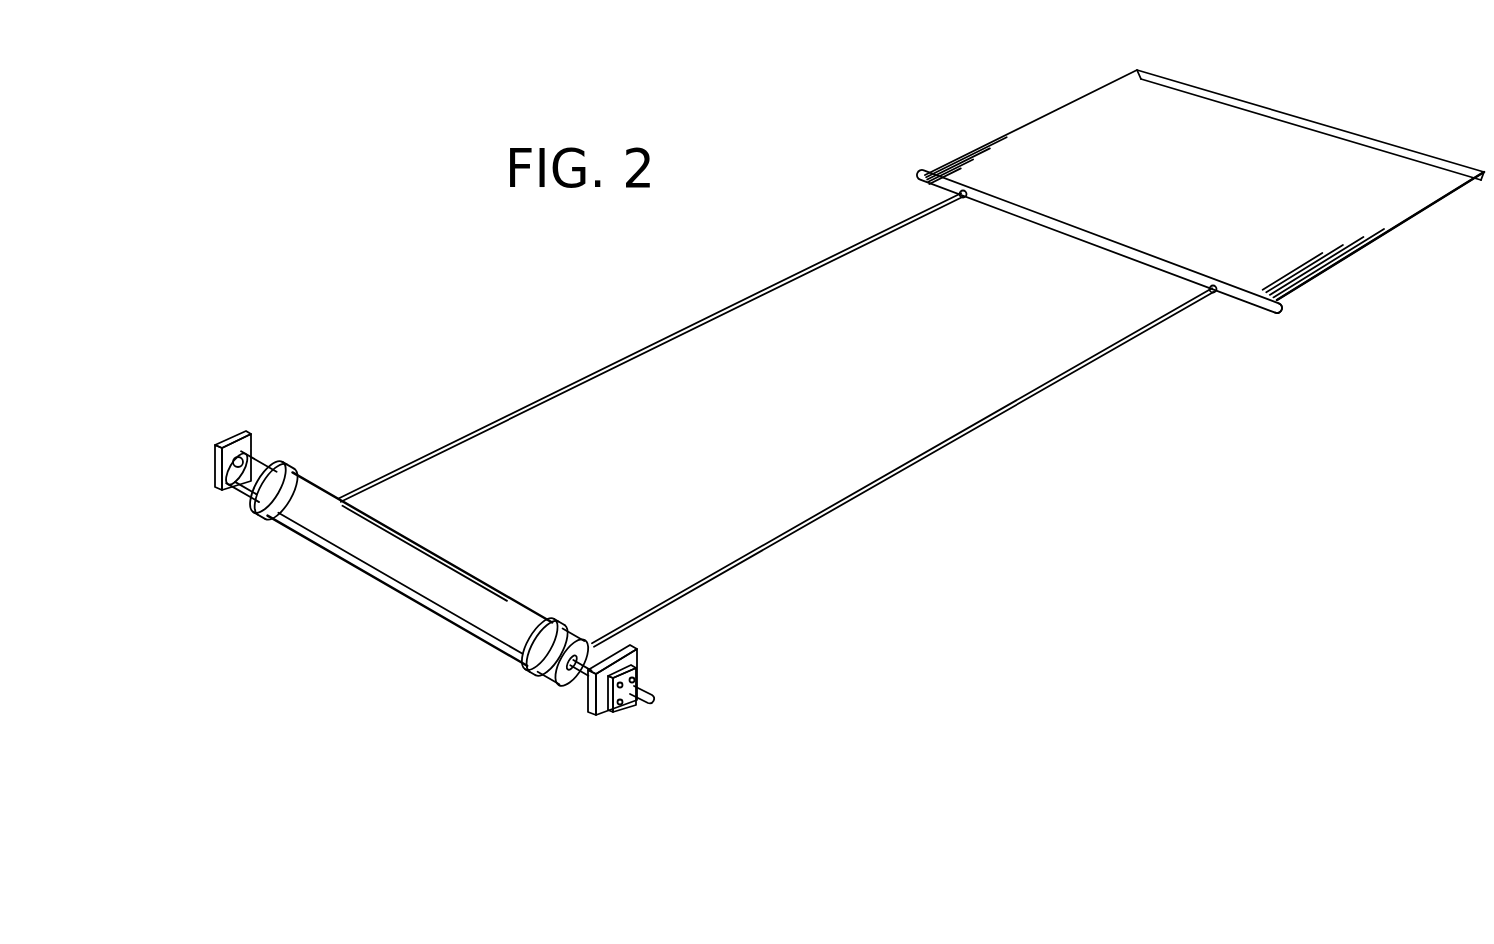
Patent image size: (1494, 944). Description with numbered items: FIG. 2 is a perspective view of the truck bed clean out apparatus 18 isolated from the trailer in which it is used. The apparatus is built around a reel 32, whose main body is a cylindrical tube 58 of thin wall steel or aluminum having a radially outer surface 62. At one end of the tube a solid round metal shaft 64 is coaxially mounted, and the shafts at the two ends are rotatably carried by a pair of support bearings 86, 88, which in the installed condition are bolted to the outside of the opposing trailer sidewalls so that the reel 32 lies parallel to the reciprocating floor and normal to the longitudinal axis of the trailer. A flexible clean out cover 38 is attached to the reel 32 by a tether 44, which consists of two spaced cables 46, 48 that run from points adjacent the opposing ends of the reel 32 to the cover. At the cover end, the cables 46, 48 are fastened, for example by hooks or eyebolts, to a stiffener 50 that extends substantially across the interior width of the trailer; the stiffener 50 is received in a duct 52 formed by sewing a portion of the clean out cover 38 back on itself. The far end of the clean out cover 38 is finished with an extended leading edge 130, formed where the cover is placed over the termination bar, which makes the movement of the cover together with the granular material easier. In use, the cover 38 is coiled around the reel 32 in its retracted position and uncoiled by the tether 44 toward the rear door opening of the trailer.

The clean out apparatus 18 is at (530, 338).
The reel 32 is at (408, 595).
The clean out cover 38 is at (1330, 148).
The tether 44 is at (776, 420).
The cable 46 is at (878, 488).
The cable 48 is at (525, 421).
The stiffener 50 is at (1284, 312).
The duct 52 is at (912, 166).
The cylindrical tube 58 is at (532, 683).
The radially outer surface 62 is at (451, 594).
The shaft 64 is at (652, 696).
The support bearing 86 is at (597, 722).
The support bearing 88 is at (210, 504).
The leading edge 130 is at (1428, 146).